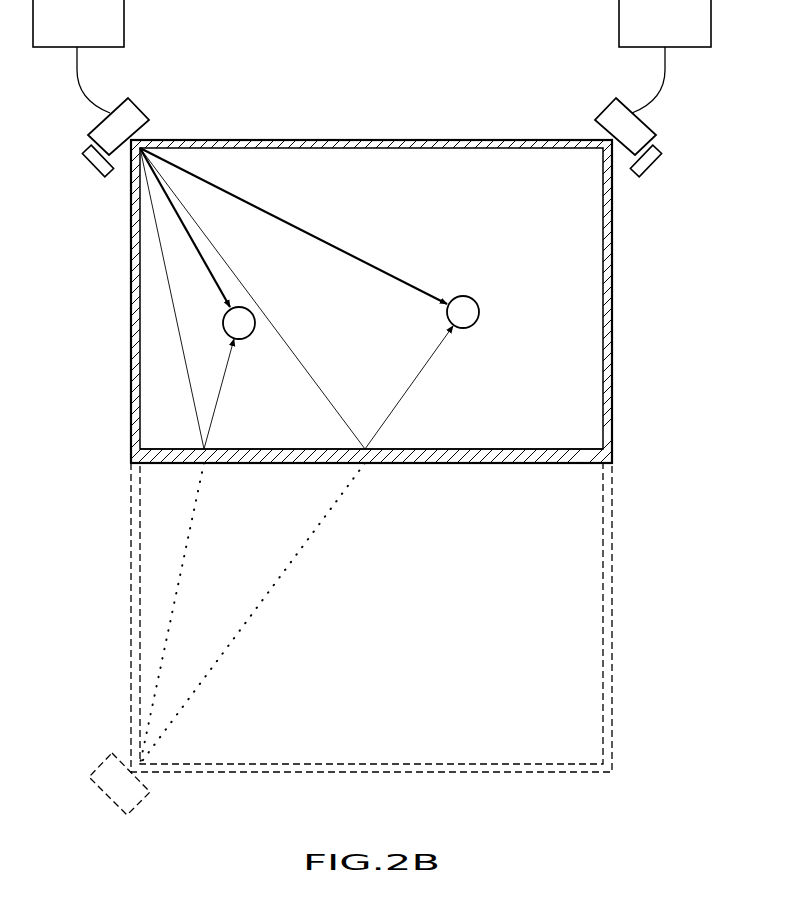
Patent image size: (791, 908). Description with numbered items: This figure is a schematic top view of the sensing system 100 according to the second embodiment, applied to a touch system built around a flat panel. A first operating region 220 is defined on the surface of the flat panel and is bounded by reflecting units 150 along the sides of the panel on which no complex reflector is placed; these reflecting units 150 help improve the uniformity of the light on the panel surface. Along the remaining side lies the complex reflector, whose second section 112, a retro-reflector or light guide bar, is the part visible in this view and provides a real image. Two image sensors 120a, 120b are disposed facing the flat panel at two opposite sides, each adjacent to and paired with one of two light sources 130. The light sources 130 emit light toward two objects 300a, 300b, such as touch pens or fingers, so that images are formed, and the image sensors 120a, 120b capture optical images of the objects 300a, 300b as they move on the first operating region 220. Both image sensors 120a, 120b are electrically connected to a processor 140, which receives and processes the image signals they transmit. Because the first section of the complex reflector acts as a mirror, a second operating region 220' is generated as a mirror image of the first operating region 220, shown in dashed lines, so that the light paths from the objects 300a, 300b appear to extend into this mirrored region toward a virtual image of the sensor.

The sensing system 100 is at (497, 34).
The second section 112 is at (563, 457).
The image sensor 120a is at (133, 115).
The image sensor 120b is at (610, 112).
The light source 130 is at (95, 170).
The processor 140 is at (97, 31).
The reflecting unit 150 is at (400, 140).
The first operating region 220 is at (411, 298).
The second operating region 220' is at (389, 639).
The object 300a is at (472, 311).
The object 300b is at (246, 331).